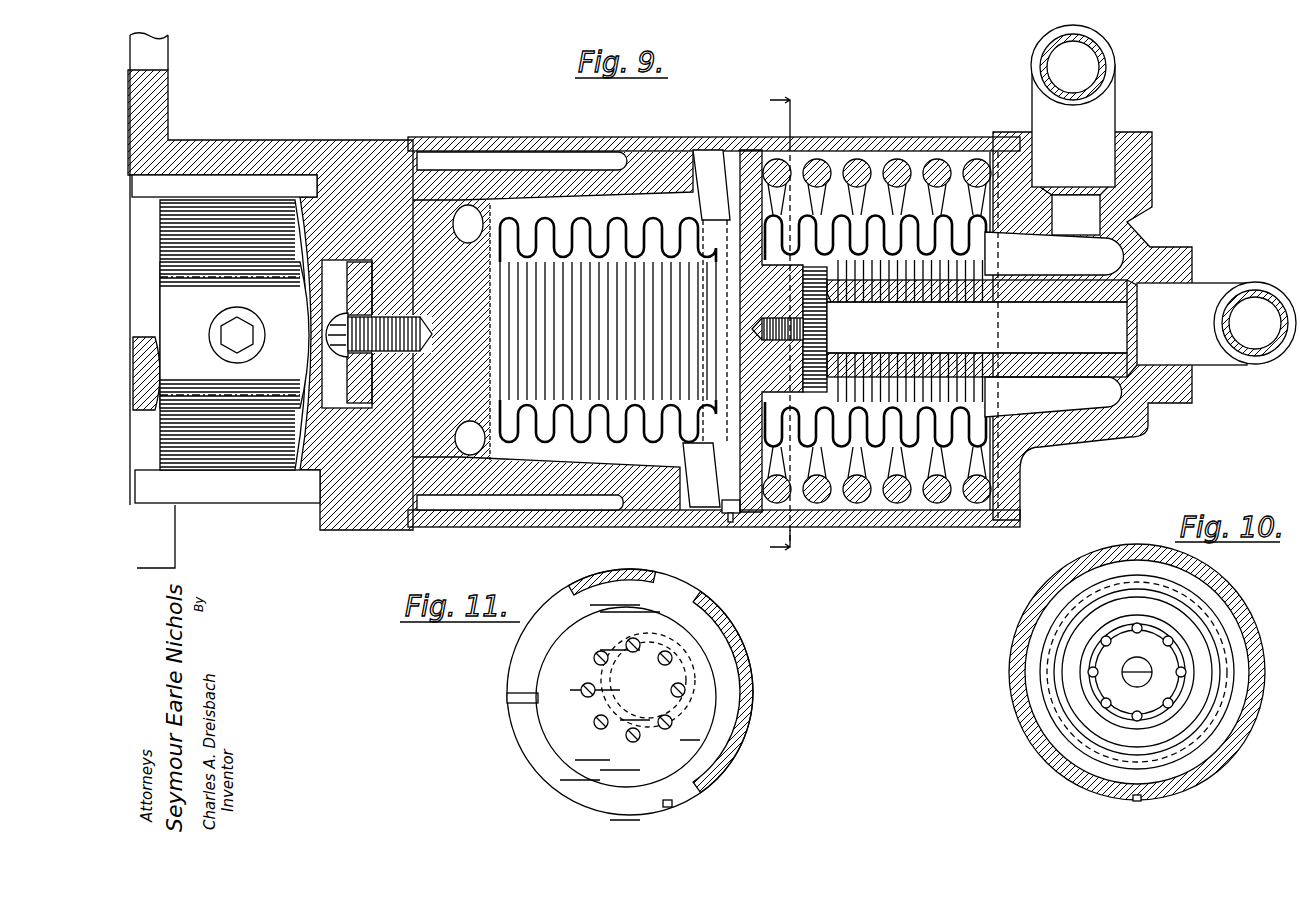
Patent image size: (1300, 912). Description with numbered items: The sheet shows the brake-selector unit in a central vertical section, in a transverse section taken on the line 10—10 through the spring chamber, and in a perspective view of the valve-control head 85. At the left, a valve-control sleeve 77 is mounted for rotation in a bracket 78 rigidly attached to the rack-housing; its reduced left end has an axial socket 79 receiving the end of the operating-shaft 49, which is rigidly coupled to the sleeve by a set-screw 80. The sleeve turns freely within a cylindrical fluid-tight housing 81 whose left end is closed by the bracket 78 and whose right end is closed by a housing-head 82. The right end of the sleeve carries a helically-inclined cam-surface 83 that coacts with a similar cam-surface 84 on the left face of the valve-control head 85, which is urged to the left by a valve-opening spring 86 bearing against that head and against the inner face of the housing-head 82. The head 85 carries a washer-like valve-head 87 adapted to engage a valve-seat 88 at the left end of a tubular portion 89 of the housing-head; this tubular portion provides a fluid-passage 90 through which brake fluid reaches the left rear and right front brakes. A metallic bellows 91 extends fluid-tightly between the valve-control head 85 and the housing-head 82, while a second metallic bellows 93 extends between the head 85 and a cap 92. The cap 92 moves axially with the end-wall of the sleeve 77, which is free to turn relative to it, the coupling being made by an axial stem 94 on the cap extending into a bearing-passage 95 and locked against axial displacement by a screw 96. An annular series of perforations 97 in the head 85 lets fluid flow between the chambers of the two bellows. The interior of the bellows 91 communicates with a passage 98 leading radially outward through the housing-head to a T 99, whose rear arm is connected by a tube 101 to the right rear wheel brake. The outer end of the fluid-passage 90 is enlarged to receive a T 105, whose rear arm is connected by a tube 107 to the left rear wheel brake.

In FIG. 9, the section line 10— 10 is at (875, 325).
In FIG. 9, the operating-shaft 49 is at (158, 260).
In FIG. 9, the valve-control sleeve 77 is at (510, 170).
In FIG. 9, the bracket 78 is at (330, 140).
In FIG. 9, the axial socket 79 is at (338, 410).
In FIG. 9, the set-screw 80 is at (262, 340).
In FIG. 9, the housing 81 is at (592, 137).
In FIG. 10, the housing 81 is at (1014, 608).
In FIG. 9, the housing-head 82 is at (1022, 476).
In FIG. 9, the cam-surface 83 is at (698, 140).
In FIG. 9, the cam-surface 84 is at (728, 186).
In FIG. 11, the cam-surface 84 is at (540, 657).
In FIG. 9, the valve-control head 85 is at (770, 150).
In FIG. 11, the valve-control head 85 is at (752, 702).
In FIG. 10, the valve-control head 85 is at (1018, 656).
In FIG. 9, the valve-opening spring 86 is at (895, 160).
In FIG. 10, the valve-opening spring 86 is at (1026, 694).
In FIG. 9, the valve-head 87 is at (836, 338).
In FIG. 11, the valve-head 87 is at (658, 636).
In FIG. 10, the valve-head 87 is at (1130, 640).
In FIG. 9, the valve-seat 88 is at (832, 300).
In FIG. 9, the tubular portion 89 is at (1010, 283).
In FIG. 9, the fluid-passage 90 is at (978, 323).
In FIG. 9, the metallic bellows 91 is at (985, 247).
In FIG. 9, the cap 92 is at (468, 224).
In FIG. 9, the metallic bellows 93 is at (630, 218).
In FIG. 9, the axial stem 94 is at (350, 306).
In FIG. 9, the bearing-passage 95 is at (470, 438).
In FIG. 9, the screw 96 is at (336, 320).
In FIG. 9, the perforations 97 is at (730, 485).
In FIG. 11, the perforations 97 is at (590, 684).
In FIG. 10, the perforations 97 is at (1100, 650).
In FIG. 9, the passage 98 is at (1070, 232).
In FIG. 9, the T 99 is at (1116, 92).
In FIG. 9, the tube 101 is at (1036, 50).
In FIG. 9, the T 105 is at (1232, 281).
In FIG. 9, the tube 107 is at (1256, 362).